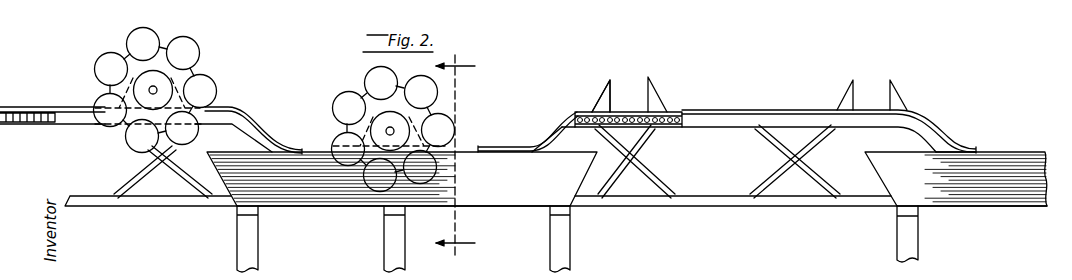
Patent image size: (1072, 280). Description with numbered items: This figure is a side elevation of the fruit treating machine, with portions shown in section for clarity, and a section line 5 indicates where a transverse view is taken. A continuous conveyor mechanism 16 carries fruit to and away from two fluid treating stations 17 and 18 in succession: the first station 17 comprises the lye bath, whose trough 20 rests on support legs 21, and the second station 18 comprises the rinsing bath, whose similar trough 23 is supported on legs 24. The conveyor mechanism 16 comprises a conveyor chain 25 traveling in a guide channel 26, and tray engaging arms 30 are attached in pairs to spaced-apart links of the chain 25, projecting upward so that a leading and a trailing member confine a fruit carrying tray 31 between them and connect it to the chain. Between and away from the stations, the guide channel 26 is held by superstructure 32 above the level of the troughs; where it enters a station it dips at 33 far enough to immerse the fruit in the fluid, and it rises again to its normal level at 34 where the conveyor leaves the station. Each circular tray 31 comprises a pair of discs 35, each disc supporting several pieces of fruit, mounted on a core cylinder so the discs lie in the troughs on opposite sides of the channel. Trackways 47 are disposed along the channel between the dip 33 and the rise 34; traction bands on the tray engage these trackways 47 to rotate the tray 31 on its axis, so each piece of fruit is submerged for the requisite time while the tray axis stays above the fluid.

The section line 5 is at (459, 156).
The conveyor mechanism 16 is at (690, 110).
The fluid treating station 17 is at (320, 136).
The fluid treating station 18 is at (988, 148).
The trough 20 is at (521, 196).
The support legs 21 is at (384, 243).
The trough 23 is at (1006, 162).
The legs 24 is at (918, 234).
The conveyor chain 25 is at (620, 114).
The guide channel 26 is at (563, 112).
The tray engaging arms 30 is at (611, 79).
The fruit carrying tray 31 is at (205, 68).
The superstructure 32 is at (129, 178).
The dip 33 is at (262, 117).
The rise 34 is at (538, 127).
The discs 35 is at (163, 32).
The trackways 47 is at (479, 147).